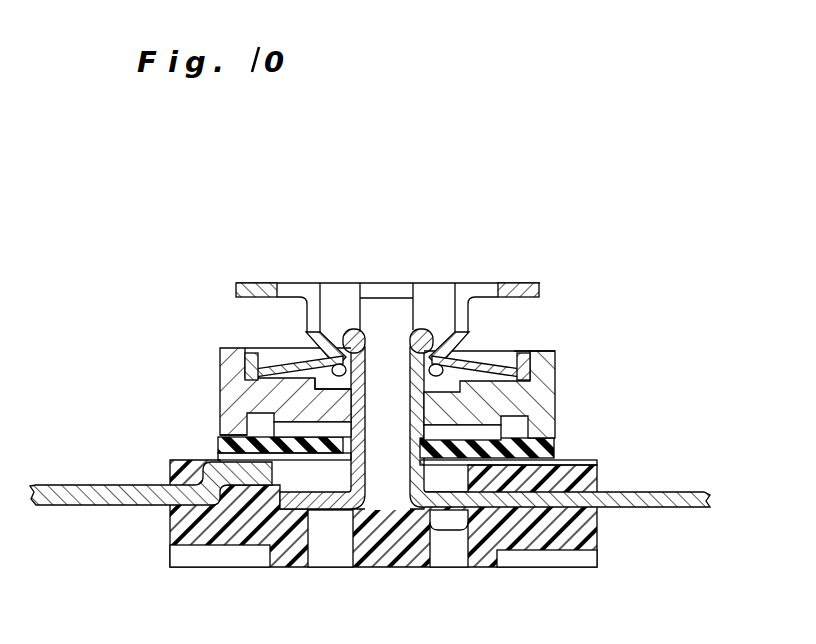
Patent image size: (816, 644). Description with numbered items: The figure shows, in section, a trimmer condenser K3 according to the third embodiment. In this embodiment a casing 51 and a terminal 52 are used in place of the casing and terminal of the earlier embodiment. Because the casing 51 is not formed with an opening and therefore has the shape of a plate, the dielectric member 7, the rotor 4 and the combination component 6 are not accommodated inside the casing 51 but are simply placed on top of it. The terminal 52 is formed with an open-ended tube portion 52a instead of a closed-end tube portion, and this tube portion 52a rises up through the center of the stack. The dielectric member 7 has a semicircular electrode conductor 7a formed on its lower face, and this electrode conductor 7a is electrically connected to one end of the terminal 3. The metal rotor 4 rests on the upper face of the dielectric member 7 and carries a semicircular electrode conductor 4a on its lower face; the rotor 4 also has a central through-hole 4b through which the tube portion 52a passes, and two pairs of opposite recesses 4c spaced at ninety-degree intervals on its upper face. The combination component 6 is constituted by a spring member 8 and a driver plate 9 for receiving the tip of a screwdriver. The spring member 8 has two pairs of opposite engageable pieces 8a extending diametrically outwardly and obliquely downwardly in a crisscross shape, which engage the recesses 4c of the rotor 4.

The trimmer condenser K3 is at (370, 401).
The terminal 3 is at (113, 503).
The rotor 4 is at (543, 370).
The electrode conductor 4a is at (237, 417).
The through-hole 4b is at (240, 390).
The recesses 4c is at (515, 353).
The combination component 6 is at (187, 199).
The dielectric member 7 is at (547, 443).
The electrode conductor 7a is at (213, 442).
The spring member 8 is at (298, 357).
The engageable pieces 8a is at (244, 345).
The driver plate 9 is at (251, 283).
The casing 51 is at (593, 478).
The terminal 52 is at (673, 509).
The tube portion 52a is at (386, 330).